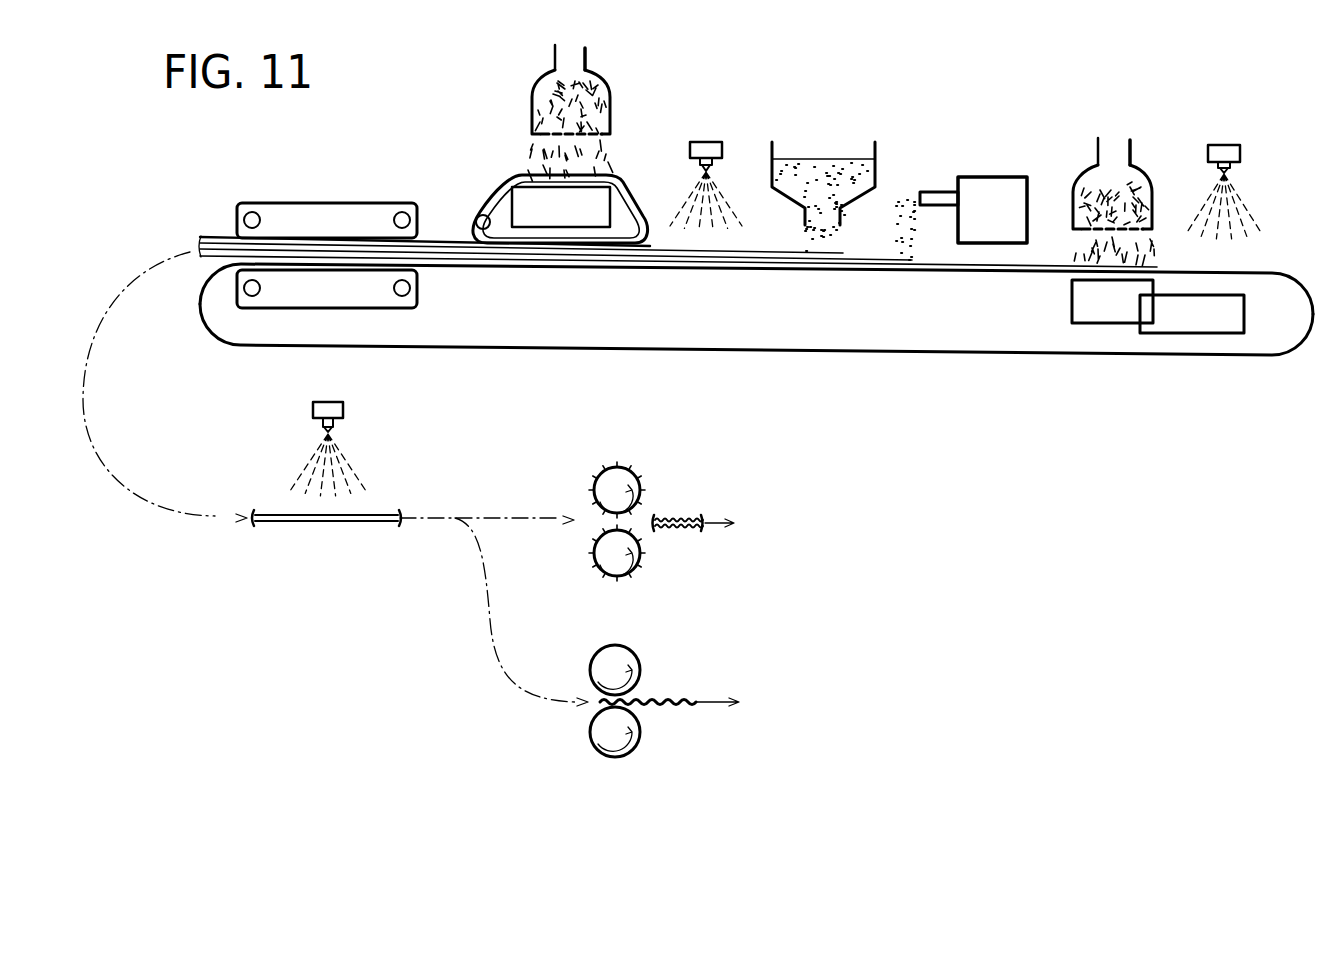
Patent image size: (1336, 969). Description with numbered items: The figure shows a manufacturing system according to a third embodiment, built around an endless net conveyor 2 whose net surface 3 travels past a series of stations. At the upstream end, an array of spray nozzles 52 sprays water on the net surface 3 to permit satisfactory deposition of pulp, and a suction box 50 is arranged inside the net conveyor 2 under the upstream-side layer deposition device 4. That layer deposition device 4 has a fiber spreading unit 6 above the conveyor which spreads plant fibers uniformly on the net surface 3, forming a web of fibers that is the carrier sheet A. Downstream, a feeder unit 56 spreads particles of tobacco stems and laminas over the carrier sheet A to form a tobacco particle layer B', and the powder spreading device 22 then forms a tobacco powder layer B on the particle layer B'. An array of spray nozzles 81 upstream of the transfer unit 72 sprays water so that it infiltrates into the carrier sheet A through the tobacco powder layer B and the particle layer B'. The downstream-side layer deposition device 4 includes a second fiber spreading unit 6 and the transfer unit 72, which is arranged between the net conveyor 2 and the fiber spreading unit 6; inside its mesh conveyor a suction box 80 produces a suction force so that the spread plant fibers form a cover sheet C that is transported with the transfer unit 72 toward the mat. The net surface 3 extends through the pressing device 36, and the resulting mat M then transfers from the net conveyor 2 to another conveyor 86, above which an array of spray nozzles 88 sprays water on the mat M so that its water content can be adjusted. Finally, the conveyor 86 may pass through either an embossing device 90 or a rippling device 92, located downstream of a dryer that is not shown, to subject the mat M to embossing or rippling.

The net conveyor 2 is at (1290, 353).
The net surface 3 is at (1263, 273).
The layer deposition device 4 is at (858, 146).
The fiber spreading unit 6 is at (612, 102).
The powder spreading device 22 is at (840, 134).
The pressing device 36 is at (363, 192).
The suction box 50 is at (1095, 313).
The spray nozzles 52 is at (1231, 143).
The feeder unit 56 is at (1000, 175).
The transfer unit 72 is at (541, 179).
The suction box 80 is at (498, 198).
The spray nozzles 81 is at (707, 140).
The conveyor 86 is at (137, 495).
The spray nozzles 88 is at (345, 412).
The embossing device 90 is at (650, 463).
The rippling device 92 is at (654, 648).
The mat M is at (222, 228).
The carrier sheet A is at (1050, 264).
The tobacco powder layer B is at (754, 220).
The tobacco particle layer B' is at (892, 208).
The cover sheet C is at (633, 184).